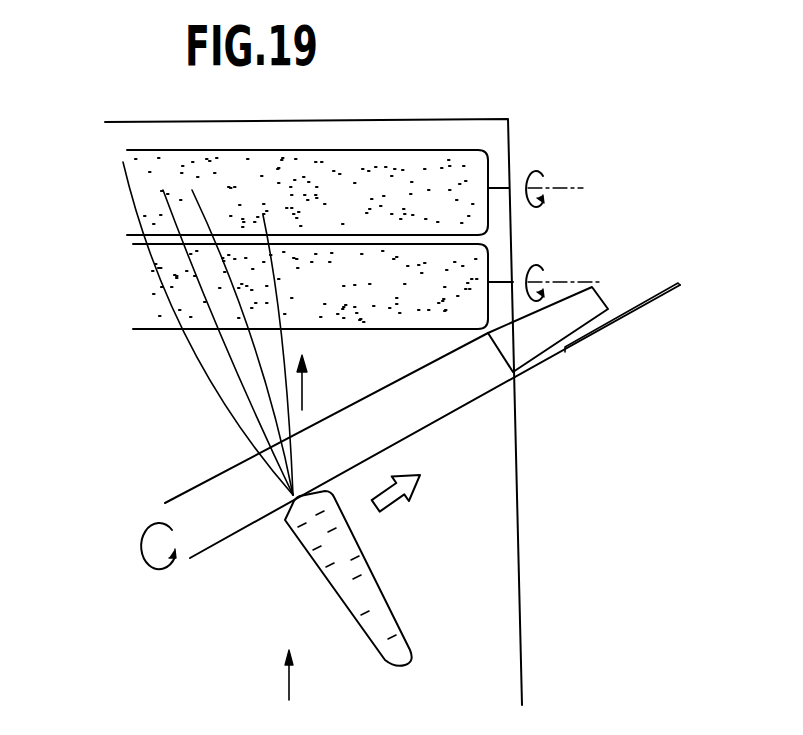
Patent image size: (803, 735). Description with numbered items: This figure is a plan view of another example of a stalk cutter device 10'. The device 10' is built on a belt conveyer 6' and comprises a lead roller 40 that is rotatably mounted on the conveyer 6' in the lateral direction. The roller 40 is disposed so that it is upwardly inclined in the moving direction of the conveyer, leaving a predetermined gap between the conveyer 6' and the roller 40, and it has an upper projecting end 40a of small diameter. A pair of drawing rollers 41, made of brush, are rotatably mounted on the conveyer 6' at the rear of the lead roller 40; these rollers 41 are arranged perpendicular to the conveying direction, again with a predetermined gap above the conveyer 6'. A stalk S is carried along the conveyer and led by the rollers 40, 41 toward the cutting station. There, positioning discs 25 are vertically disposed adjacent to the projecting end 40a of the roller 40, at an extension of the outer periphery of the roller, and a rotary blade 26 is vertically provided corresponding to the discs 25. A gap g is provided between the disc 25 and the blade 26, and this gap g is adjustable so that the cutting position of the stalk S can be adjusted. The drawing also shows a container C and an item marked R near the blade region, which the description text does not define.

The drawing rollers 41 is at (146, 213).
The stalk S is at (210, 377).
The lead roller 40 is at (221, 538).
The upper projecting end 40a is at (600, 290).
The rotary blade 26 is at (658, 298).
The gap g is at (565, 348).
The positioning disc 25 is at (517, 388).
The stalk cutter device 10' is at (660, 489).
The container C is at (380, 542).
The residue R is at (370, 637).
The belt conveyer 6' is at (351, 412).